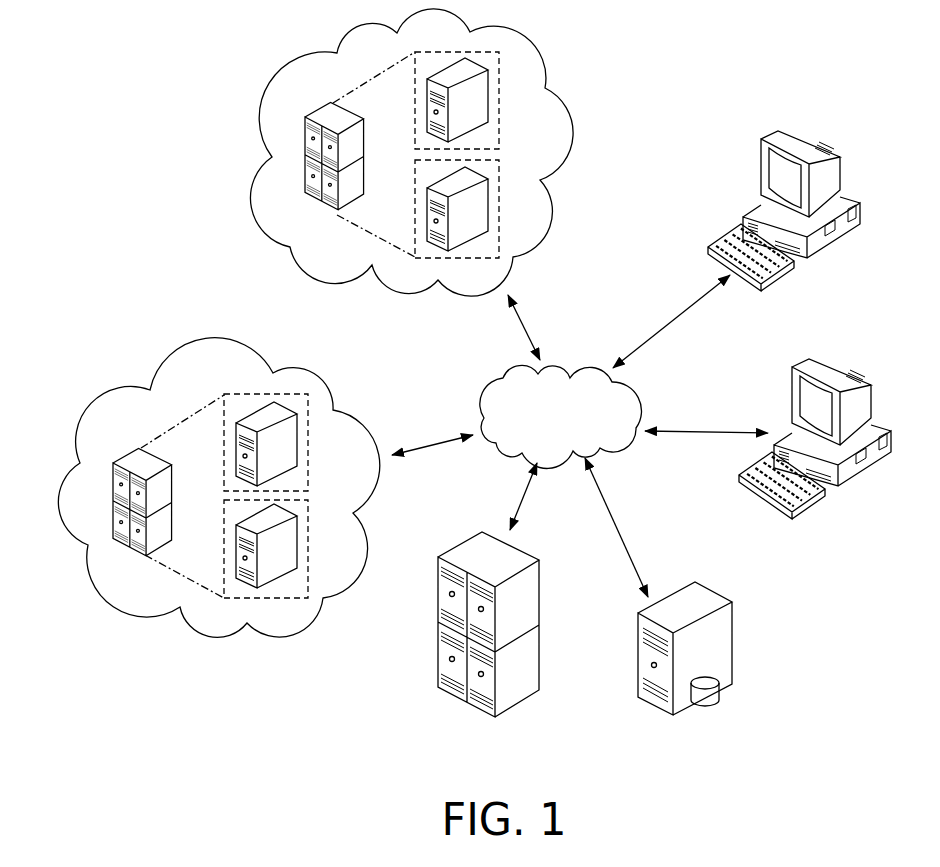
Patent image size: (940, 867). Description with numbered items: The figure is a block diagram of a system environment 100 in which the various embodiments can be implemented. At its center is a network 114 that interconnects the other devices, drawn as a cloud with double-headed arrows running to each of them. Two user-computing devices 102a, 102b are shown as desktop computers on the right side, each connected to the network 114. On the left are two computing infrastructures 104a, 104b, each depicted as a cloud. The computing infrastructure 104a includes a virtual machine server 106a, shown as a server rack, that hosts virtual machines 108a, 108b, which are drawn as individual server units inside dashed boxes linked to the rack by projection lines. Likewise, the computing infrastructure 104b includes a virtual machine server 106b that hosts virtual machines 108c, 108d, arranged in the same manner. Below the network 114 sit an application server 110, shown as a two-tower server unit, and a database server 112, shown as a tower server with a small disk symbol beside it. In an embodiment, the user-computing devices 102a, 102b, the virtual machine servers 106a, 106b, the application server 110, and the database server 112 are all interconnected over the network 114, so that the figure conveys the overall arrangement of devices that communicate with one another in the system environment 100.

The system environment 100 is at (678, 103).
The user-computing device 102a is at (843, 165).
The user-computing device 102b is at (873, 390).
The computing infrastructure 104a is at (335, 54).
The computing infrastructure 104b is at (213, 358).
The virtual machine server 106a is at (305, 157).
The virtual machine server 106b is at (132, 450).
The virtual machine 108a is at (488, 93).
The virtual machine 108b is at (500, 203).
The virtual machine 108c is at (298, 428).
The virtual machine 108d is at (297, 543).
The application server 110 is at (540, 608).
The database server 112 is at (681, 583).
The network 114 is at (642, 403).